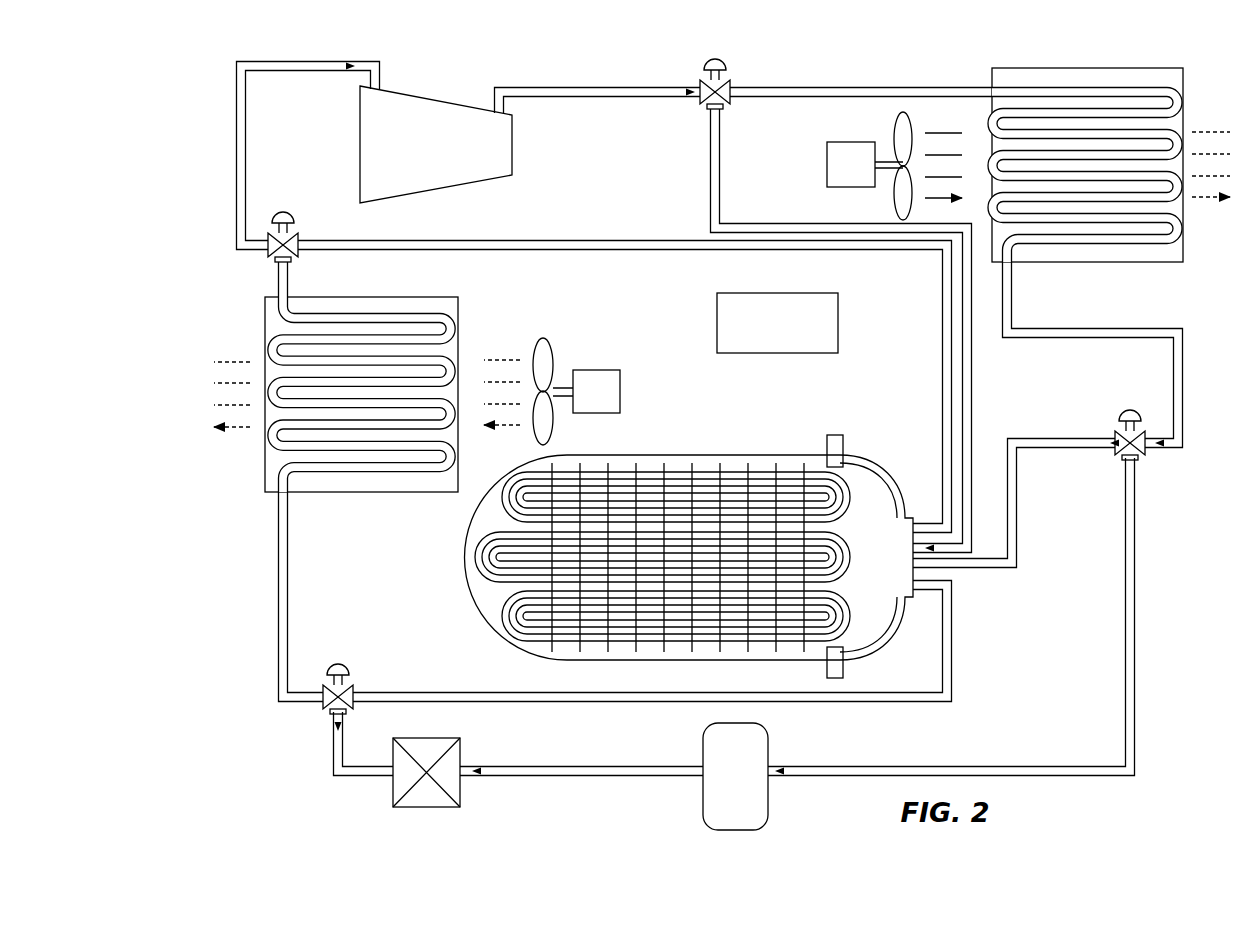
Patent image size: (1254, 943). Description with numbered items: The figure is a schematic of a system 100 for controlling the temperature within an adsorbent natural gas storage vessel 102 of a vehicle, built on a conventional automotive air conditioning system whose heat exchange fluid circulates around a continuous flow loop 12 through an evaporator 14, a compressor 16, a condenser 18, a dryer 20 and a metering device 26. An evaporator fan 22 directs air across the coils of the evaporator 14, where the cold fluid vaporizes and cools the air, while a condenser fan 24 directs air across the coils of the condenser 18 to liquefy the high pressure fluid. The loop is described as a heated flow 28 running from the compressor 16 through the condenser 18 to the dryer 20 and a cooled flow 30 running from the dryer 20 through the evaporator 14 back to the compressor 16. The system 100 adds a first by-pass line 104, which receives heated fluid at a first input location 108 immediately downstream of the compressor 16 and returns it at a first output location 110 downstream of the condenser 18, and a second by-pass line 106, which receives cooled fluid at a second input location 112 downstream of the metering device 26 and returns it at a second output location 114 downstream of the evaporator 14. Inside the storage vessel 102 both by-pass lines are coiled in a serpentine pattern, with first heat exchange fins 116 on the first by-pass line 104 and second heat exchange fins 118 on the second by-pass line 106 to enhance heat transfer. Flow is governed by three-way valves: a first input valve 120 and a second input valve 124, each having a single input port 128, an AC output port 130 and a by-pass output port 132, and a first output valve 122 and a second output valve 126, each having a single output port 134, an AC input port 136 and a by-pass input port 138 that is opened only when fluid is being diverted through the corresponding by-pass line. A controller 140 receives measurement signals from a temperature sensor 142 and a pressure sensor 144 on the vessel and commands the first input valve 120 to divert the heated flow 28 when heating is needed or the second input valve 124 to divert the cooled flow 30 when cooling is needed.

The system for controlling the temperature within an ANG storage vessel 100 is at (178, 132).
The continuous flow loop 12 is at (280, 558).
The evaporator 14 is at (265, 452).
The compressor 16 is at (417, 154).
The condenser 18 is at (1135, 68).
The dryer 20 is at (772, 793).
The evaporator blower or fan 22 is at (597, 370).
The condenser blower or fan 24 is at (827, 170).
The metering device 26 is at (463, 754).
The heated flow 28 is at (553, 86).
The cooled flow 30 is at (240, 128).
The adsorbent natural gas storage vessel 102 is at (652, 520).
The first by-pass line 104 is at (708, 182).
The second by-pass line 106 is at (652, 689).
The first input location 108 is at (697, 118).
The first output location 110 is at (1142, 470).
The second input location 112 is at (300, 715).
The second output location 114 is at (264, 270).
The first heat exchange fins 116 is at (692, 468).
The second heat exchange fins 118 is at (772, 468).
The first input valve 120 is at (716, 56).
The first output valve 122 is at (1130, 408).
The second input valve 124 is at (339, 663).
The second output valve 126 is at (283, 210).
The input port 128 is at (700, 82).
The AC output port 130 is at (745, 84).
The by-pass output port 132 is at (745, 102).
The output port 134 is at (275, 250).
The AC input port 136 is at (300, 254).
The by-pass input port 138 is at (297, 235).
The controller 140 is at (762, 336).
The temperature sensor 142 is at (840, 435).
The pressure sensor 144 is at (843, 667).